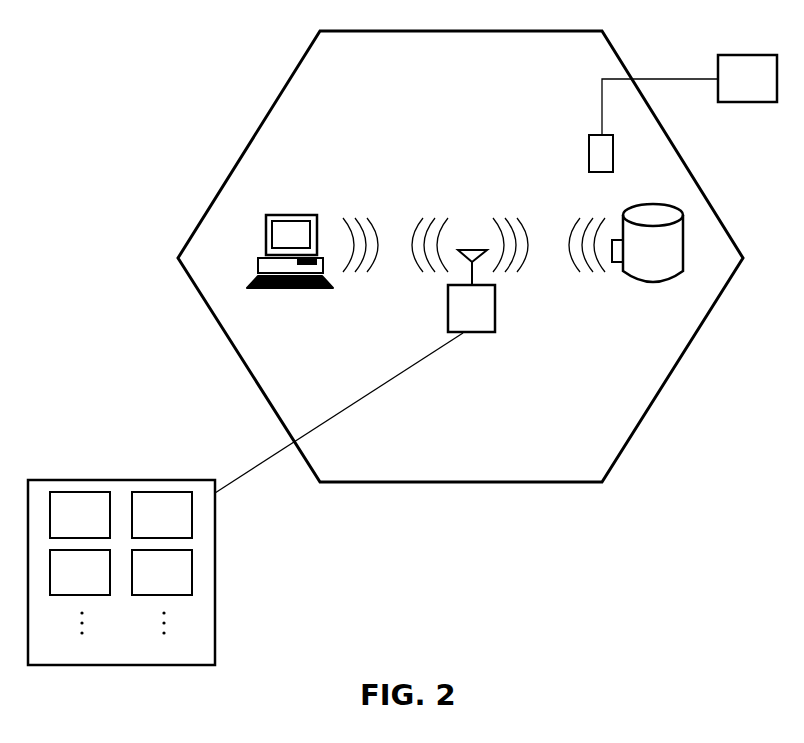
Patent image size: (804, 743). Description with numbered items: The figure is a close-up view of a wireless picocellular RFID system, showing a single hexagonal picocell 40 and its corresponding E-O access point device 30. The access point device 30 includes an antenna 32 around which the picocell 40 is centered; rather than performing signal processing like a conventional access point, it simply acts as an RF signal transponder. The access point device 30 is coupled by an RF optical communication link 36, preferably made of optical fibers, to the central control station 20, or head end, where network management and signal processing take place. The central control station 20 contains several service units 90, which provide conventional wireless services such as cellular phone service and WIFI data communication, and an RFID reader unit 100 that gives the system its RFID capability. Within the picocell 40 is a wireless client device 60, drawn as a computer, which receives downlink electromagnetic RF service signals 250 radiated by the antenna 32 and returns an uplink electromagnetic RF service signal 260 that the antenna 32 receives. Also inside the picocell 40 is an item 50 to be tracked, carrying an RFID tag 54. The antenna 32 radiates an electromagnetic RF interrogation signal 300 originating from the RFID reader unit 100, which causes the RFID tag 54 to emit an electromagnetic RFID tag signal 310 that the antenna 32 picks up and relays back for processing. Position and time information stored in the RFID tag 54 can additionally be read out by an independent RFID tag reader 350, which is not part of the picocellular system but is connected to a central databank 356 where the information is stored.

The central control station 20 is at (121, 544).
The E-O access point device 30 is at (484, 320).
The antenna 32 is at (472, 250).
The RF optical communication link 36 is at (242, 481).
The picocell 40 is at (262, 122).
The item 50 is at (666, 258).
The RFID tag 54 is at (613, 262).
The wireless client device 60 is at (282, 215).
The service unit 90 is at (93, 524).
The RFID reader unit 100 is at (181, 524).
The downlink electromagnetic RF service signal 250 is at (395, 272).
The uplink electromagnetic RF service signal 260 is at (383, 208).
The electromagnetic RF interrogation signal 300 is at (537, 282).
The electromagnetic RFID tag signal 310 is at (558, 198).
The independent RFID tag reader 350 is at (613, 148).
The central databank 356 is at (747, 78).